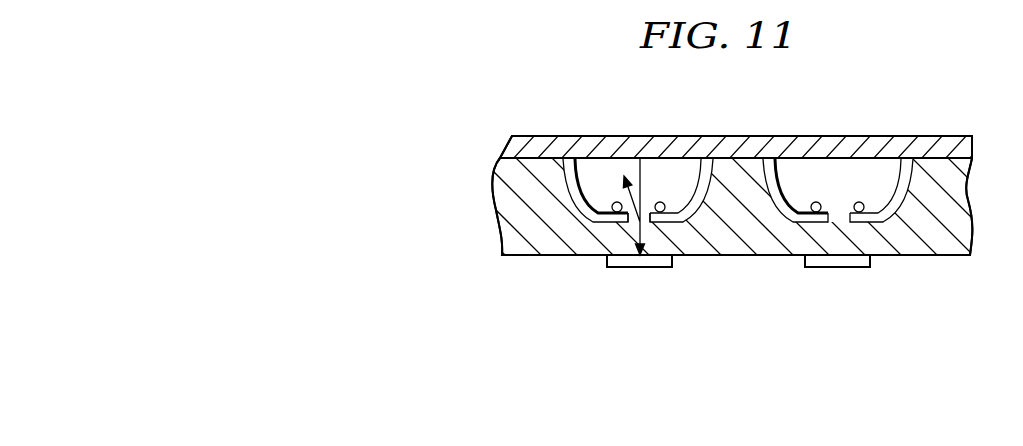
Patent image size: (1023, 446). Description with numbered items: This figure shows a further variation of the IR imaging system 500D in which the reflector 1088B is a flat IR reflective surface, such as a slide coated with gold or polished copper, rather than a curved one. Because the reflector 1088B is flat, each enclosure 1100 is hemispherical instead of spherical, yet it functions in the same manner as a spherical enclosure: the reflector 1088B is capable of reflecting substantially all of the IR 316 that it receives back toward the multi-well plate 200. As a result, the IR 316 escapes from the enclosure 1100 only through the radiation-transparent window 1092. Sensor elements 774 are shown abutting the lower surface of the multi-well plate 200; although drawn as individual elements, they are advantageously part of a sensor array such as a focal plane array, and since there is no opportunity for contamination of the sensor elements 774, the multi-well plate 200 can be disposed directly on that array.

The IR imaging system 500D is at (335, 175).
The reflector 1088B is at (506, 143).
The multi-well plate 200 is at (496, 199).
The enclosure 1100 is at (600, 170).
The IR 316 is at (646, 184).
The sensor elements 774 is at (637, 270).
The radiation-transparent window 1092 is at (648, 232).